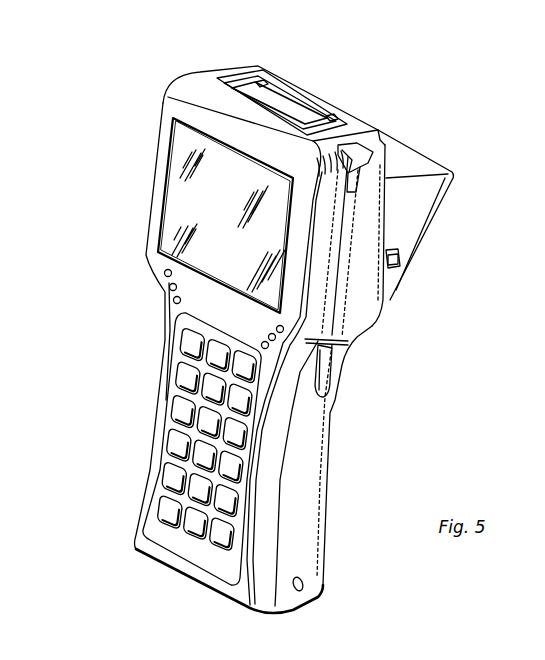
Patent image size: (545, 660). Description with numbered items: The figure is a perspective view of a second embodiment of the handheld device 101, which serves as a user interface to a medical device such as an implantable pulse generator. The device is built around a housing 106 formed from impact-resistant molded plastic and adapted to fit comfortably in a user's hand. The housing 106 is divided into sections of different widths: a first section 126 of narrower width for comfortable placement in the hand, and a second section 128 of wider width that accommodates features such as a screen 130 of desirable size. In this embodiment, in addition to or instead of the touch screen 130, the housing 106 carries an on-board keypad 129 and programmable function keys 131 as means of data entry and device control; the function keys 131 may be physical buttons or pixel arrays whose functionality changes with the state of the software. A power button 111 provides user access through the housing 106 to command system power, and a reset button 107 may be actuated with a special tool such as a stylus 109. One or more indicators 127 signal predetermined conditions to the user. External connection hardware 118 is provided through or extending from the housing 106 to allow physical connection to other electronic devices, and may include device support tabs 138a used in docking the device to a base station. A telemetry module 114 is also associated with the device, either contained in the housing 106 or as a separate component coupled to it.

The handheld device 101 is at (352, 79).
The external connection hardware 118 is at (257, 67).
The screen 130 is at (213, 210).
The indicators 127 is at (279, 326).
The programmable function keys 131 is at (250, 356).
The power button 111 is at (217, 358).
The keypad 129 is at (207, 413).
The second section 128 is at (360, 297).
The telemetry module 114 is at (420, 201).
The device support tabs 138a is at (400, 261).
The stylus 109 is at (327, 360).
The first section 126 is at (310, 432).
The housing 106 is at (300, 497).
The reset button 107 is at (305, 584).